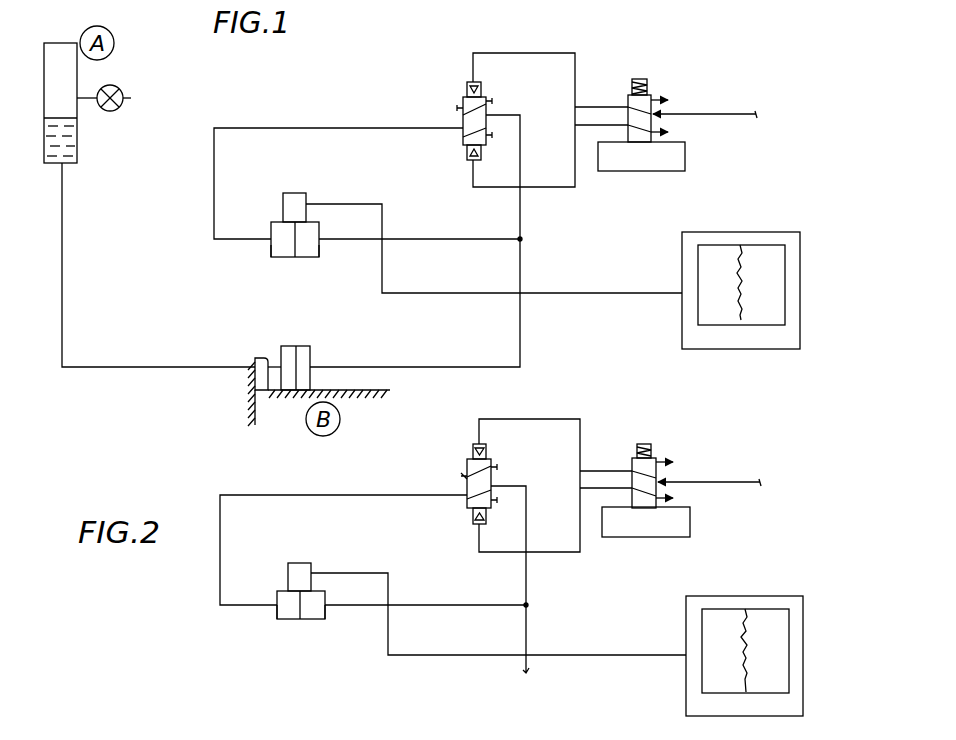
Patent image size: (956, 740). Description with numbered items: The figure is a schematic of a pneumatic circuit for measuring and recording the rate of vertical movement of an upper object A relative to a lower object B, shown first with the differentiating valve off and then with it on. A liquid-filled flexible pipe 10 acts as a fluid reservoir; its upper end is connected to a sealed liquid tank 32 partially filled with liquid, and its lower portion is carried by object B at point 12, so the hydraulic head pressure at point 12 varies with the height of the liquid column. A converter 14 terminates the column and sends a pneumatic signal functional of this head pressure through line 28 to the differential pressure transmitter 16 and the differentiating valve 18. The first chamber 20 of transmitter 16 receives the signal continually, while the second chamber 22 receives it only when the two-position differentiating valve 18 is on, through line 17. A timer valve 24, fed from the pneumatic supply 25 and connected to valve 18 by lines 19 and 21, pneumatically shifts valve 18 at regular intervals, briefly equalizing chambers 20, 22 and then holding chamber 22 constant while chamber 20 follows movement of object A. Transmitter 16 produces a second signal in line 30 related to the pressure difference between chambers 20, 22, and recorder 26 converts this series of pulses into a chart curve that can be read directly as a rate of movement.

In FIG. 1, the flexible pipe 10 is at (63, 230).
In FIG. 2, the flexible pipe 10 is at (365, 735).
In FIG. 1, the point 12 is at (262, 358).
In FIG. 1, the converter 14 is at (295, 346).
In FIG. 1, the differential pressure transmitter 16 is at (296, 257).
In FIG. 2, the differential pressure transmitter 16 is at (300, 619).
In FIG. 1, the line 17 is at (255, 128).
In FIG. 2, the line 17 is at (263, 495).
In FIG. 1, the differentiating valve 18 is at (487, 97).
In FIG. 2, the differentiating valve 18 is at (492, 460).
In FIG. 1, the line 19 is at (528, 53).
In FIG. 2, the line 19 is at (563, 419).
In FIG. 1, the first chamber 20 is at (316, 247).
In FIG. 2, the first chamber 20 is at (322, 617).
In FIG. 1, the line 21 is at (556, 188).
In FIG. 2, the line 21 is at (562, 553).
In FIG. 1, the second chamber 22 is at (277, 250).
In FIG. 2, the second chamber 22 is at (282, 616).
In FIG. 1, the timer valve 24 is at (651, 95).
In FIG. 2, the timer valve 24 is at (657, 458).
In FIG. 1, the pneumatic supply 25 is at (753, 113).
In FIG. 2, the pneumatic supply 25 is at (755, 481).
In FIG. 1, the recorder 26 is at (800, 260).
In FIG. 2, the recorder 26 is at (805, 658).
In FIG. 1, the line 28 is at (355, 364).
In FIG. 2, the line 28 is at (465, 603).
In FIG. 1, the line 30 is at (442, 294).
In FIG. 2, the line 30 is at (460, 656).
In FIG. 1, the liquid tank 32 is at (82, 142).